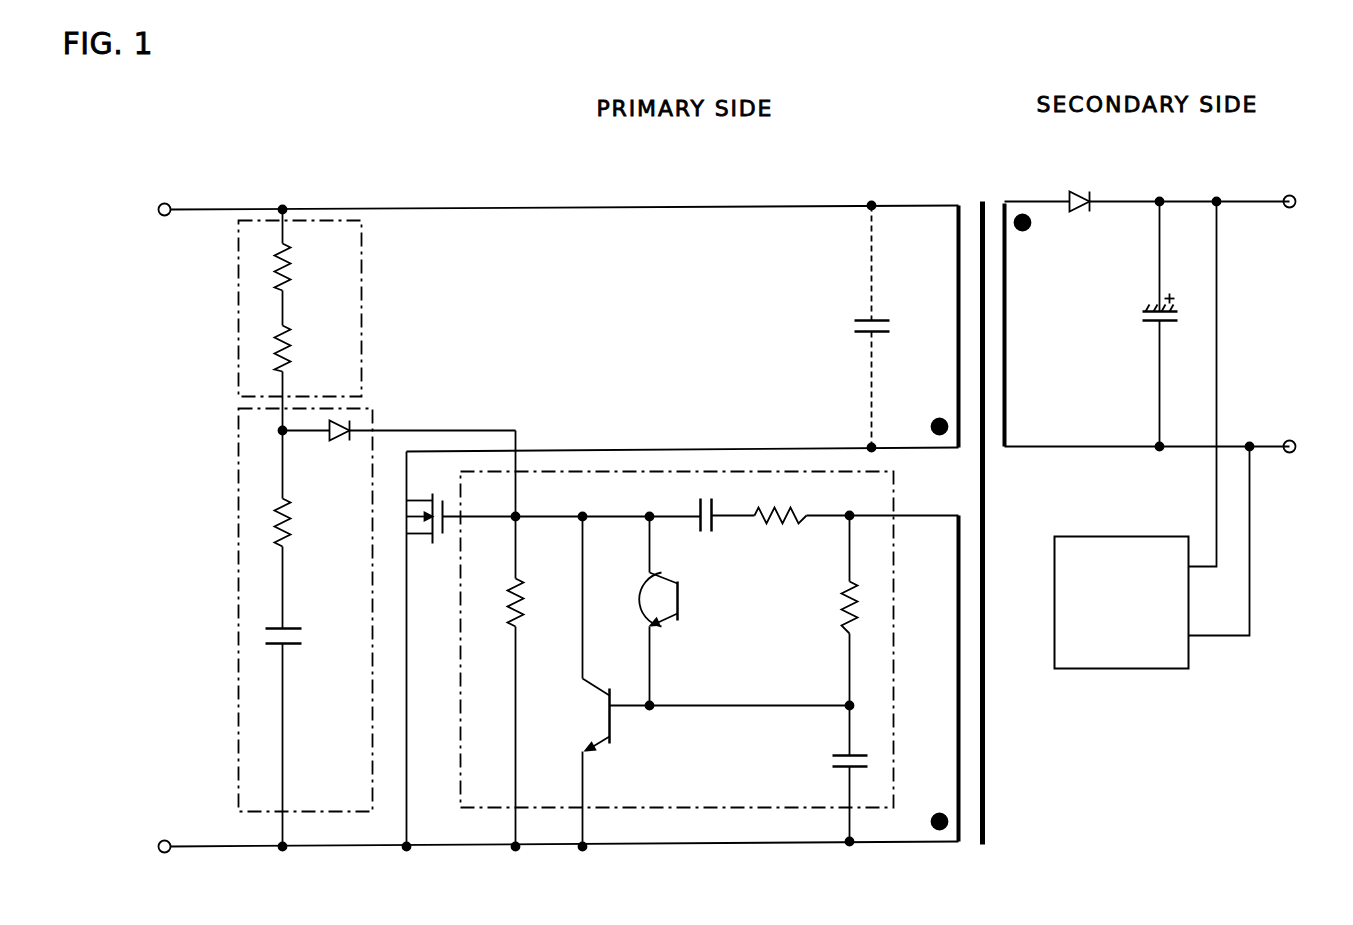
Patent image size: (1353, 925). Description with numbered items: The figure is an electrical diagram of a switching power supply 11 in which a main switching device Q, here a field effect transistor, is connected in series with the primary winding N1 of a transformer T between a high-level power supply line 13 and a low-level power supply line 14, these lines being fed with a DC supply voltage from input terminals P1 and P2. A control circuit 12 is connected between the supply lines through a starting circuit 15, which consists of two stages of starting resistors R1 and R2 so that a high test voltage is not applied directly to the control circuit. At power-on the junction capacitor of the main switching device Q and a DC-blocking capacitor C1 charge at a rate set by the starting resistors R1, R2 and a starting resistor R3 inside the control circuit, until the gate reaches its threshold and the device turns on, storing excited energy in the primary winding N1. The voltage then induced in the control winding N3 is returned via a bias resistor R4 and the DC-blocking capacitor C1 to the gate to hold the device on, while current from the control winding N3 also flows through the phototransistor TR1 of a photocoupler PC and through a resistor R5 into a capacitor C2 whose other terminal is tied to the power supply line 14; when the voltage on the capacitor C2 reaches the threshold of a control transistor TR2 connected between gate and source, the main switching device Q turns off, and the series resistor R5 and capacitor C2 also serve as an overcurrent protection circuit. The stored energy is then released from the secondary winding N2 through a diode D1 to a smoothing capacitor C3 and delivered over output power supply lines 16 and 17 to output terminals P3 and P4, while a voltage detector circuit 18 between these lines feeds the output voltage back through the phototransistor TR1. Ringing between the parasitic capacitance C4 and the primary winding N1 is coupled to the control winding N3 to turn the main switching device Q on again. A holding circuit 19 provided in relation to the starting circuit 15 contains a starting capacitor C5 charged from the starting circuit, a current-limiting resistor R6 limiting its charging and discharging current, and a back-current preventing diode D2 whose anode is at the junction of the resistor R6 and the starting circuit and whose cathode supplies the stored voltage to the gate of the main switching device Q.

The switching power supply 11 is at (428, 150).
The control circuit 12 is at (688, 473).
The power supply line 13 is at (222, 209).
The power supply line 14 is at (216, 851).
The starting circuit 15 is at (366, 284).
The output power supply line 16 is at (1192, 203).
The output power supply line 17 is at (1190, 453).
The voltage detector circuit 18 is at (1123, 672).
The holding circuit 19 is at (316, 815).
The main switching device Q is at (421, 501).
The transformer T is at (980, 215).
The primary winding N1 is at (956, 365).
The secondary winding N2 is at (1008, 365).
The control winding N3 is at (957, 686).
The starting resistor R1 is at (290, 268).
The starting resistor R2 is at (290, 352).
The starting resistor R3 is at (519, 604).
The bias resistor R4 is at (795, 526).
The resistor R5 is at (843, 618).
The current-limiting resistor R6 is at (290, 523).
The DC-blocking capacitor C1 is at (712, 535).
The capacitor C2 is at (835, 757).
The smoothing capacitor C3 is at (1154, 312).
The parasitic capacitance C4 is at (863, 321).
The starting capacitor C5 is at (300, 632).
The diode D1 is at (1086, 199).
The back-current preventing diode D2 is at (345, 442).
The phototransistor TR1 is at (682, 605).
The control transistor TR2 is at (604, 744).
The photocoupler PC is at (678, 630).
The input terminal P1 is at (165, 204).
The input terminal P2 is at (165, 841).
The output terminal P3 is at (1290, 196).
The output terminal P4 is at (1290, 441).